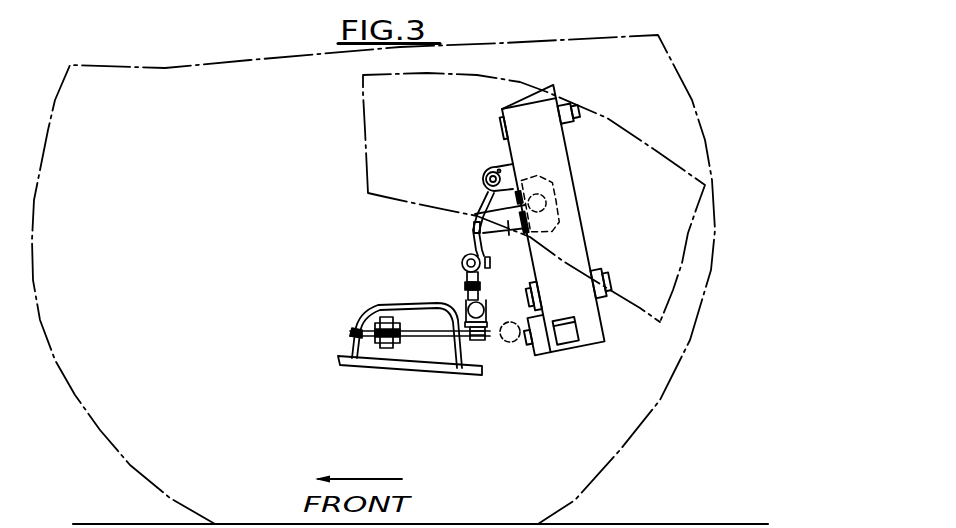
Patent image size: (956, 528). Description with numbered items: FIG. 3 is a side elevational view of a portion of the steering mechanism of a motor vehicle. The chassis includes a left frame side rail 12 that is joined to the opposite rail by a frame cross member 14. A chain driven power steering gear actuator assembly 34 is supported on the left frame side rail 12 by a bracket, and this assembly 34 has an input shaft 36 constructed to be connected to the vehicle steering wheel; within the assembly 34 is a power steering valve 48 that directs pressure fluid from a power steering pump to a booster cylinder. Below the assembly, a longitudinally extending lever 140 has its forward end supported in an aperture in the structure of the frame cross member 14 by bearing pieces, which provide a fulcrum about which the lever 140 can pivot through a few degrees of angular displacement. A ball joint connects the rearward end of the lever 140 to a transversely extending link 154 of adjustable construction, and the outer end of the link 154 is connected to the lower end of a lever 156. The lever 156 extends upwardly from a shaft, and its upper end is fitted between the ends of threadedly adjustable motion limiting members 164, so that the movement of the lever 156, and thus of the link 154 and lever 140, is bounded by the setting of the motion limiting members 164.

The left frame side rail 12 is at (700, 141).
The frame cross member 14 is at (416, 378).
The power steering gear actuator assembly 34 is at (588, 230).
The input shaft 36 is at (575, 115).
The power steering valve 48 is at (501, 238).
The longitudinally extending lever 140 is at (409, 332).
The transversely extending link 154 is at (466, 296).
The lever 156 is at (476, 243).
The motion limiting members 164 is at (484, 176).